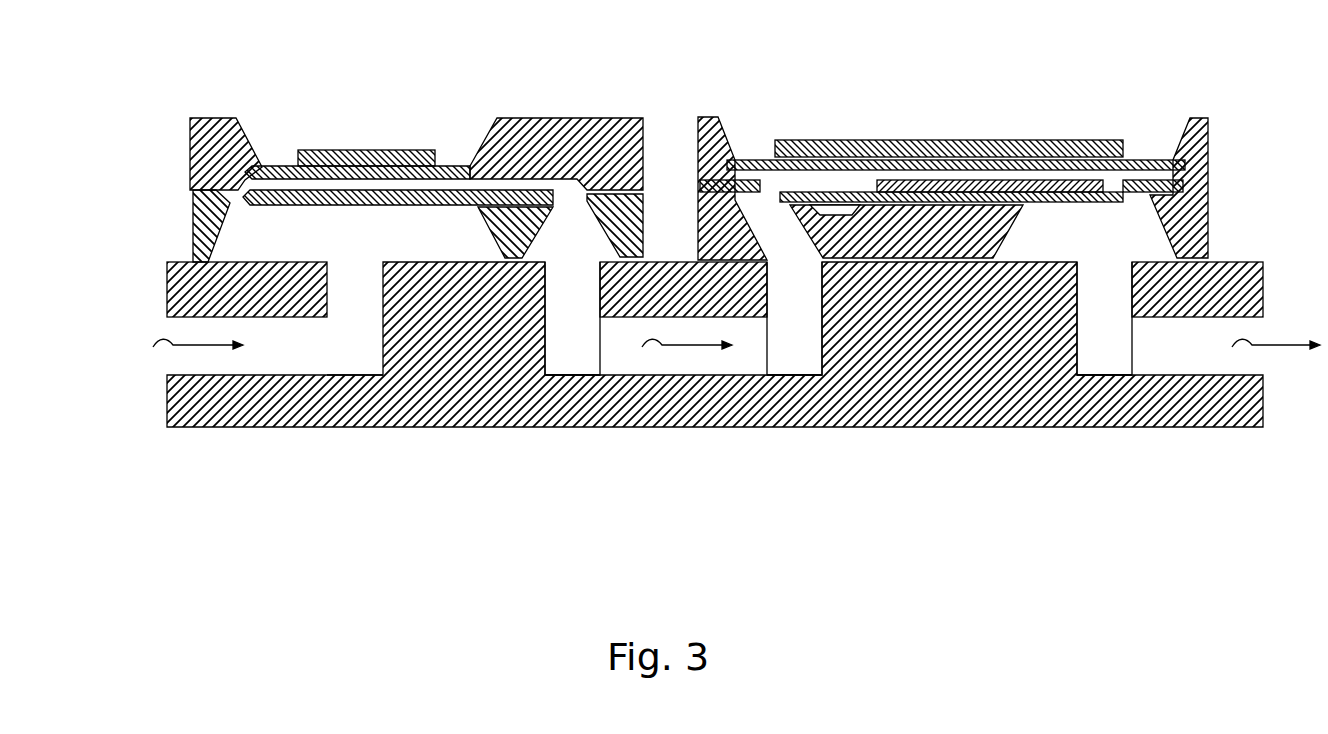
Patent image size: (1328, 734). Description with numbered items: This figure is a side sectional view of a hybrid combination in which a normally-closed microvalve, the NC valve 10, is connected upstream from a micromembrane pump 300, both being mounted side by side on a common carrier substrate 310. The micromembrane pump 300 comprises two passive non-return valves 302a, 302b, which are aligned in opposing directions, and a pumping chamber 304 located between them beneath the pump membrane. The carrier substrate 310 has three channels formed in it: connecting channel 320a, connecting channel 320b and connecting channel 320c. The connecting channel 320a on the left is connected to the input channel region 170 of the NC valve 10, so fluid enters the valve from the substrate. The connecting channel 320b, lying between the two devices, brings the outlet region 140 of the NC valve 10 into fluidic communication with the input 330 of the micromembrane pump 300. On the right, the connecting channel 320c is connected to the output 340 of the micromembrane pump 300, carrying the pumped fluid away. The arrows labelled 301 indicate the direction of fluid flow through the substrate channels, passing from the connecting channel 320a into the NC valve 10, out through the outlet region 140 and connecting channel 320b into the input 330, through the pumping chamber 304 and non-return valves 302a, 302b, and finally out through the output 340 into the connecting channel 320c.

The NC valve 10 is at (416, 150).
The micromembrane pump 300 is at (964, 146).
The passive non-return valve 302a is at (778, 178).
The passive non-return valve 302b is at (1116, 177).
The pumping chamber 304 is at (882, 177).
The carrier substrate 310 is at (167, 287).
The fluid flow 301 is at (711, 348).
The connecting channel 320a is at (314, 373).
The connecting channel 320b is at (722, 376).
The connecting channel 320c is at (1124, 376).
The outlet region 140 is at (564, 255).
The input channel region 170 is at (300, 229).
The input 330 is at (797, 258).
The output 340 is at (1101, 255).